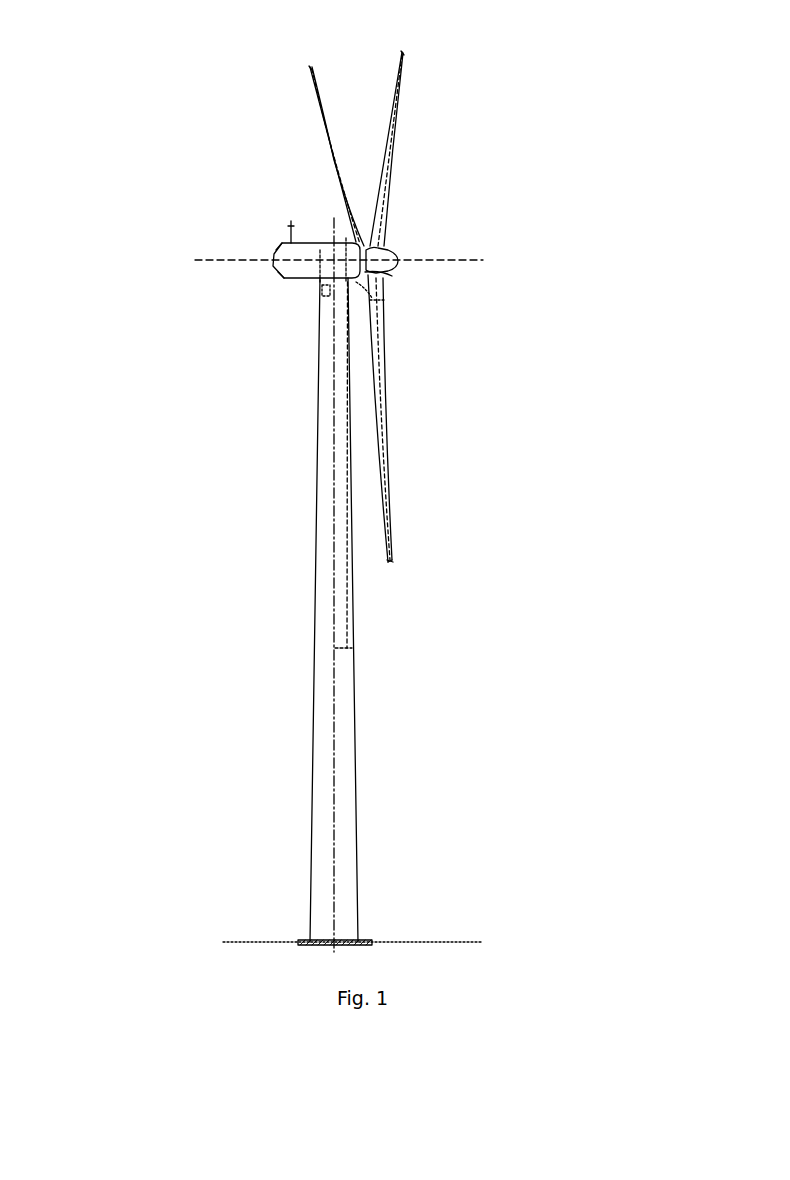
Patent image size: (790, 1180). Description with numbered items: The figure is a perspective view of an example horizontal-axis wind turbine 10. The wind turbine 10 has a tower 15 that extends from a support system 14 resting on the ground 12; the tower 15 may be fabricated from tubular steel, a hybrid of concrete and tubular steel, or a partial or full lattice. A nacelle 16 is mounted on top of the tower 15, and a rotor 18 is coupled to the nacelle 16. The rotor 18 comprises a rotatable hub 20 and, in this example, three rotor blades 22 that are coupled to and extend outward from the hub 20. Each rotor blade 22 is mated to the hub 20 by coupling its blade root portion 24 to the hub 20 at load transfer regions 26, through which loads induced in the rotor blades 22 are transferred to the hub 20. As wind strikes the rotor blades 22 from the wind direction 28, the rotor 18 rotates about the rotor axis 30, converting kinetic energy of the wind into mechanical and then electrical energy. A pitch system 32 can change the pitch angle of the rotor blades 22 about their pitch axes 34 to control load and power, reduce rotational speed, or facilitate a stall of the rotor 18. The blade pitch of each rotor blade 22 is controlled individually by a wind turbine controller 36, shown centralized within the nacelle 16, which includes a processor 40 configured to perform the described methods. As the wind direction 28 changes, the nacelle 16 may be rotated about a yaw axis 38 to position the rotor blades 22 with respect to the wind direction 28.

The wind turbine 10 is at (124, 78).
The ground 12 is at (245, 940).
The support system 14 is at (300, 940).
The tower 15 is at (322, 586).
The nacelle 16 is at (298, 278).
The rotor 18 is at (402, 178).
The rotatable hub 20 is at (397, 258).
The rotor blade 22 is at (326, 124).
The blade root portion 24 is at (382, 345).
The load transfer regions 26 is at (382, 278).
The wind direction 28 is at (685, 260).
The rotor axis 30 is at (455, 262).
The pitch system 32 is at (372, 298).
The pitch axes 34 is at (308, 70).
The wind turbine controller 36 is at (328, 296).
The yaw axis 38 is at (352, 645).
The processor 40 is at (340, 235).